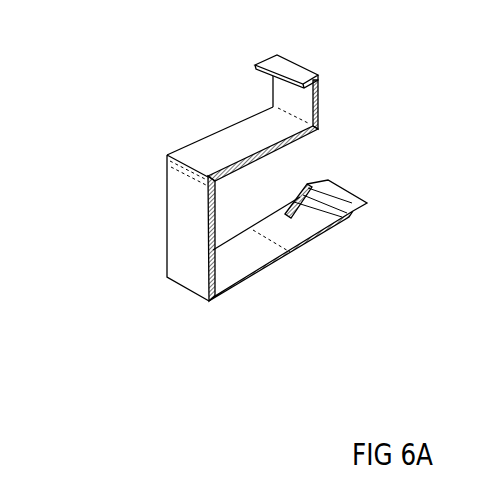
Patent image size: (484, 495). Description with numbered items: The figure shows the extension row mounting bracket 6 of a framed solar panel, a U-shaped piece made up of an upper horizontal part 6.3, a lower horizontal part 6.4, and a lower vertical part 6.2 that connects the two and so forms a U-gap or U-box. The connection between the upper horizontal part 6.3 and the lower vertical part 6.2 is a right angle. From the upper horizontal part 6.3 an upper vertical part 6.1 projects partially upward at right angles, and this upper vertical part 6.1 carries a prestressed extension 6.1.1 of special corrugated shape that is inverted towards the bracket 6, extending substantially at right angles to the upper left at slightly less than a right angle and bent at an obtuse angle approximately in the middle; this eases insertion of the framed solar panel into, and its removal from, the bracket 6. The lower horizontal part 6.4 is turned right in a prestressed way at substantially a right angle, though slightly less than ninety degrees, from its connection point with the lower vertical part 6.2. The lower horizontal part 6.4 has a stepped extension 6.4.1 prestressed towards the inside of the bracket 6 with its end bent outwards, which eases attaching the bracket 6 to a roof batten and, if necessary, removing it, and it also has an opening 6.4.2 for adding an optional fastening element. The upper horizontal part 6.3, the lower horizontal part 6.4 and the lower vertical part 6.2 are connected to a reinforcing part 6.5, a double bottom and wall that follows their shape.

The extension row mounting bracket 6 is at (129, 100).
The upper vertical part 6.1 is at (319, 102).
The prestressed extension 6.1.1 is at (298, 72).
The lower vertical part 6.2 is at (167, 209).
The upper horizontal part 6.3 is at (213, 133).
The lower horizontal part 6.4 is at (303, 247).
The stepped extension 6.4.1 is at (368, 204).
The opening 6.4.2 is at (333, 218).
The reinforcing part 6.5 is at (241, 265).